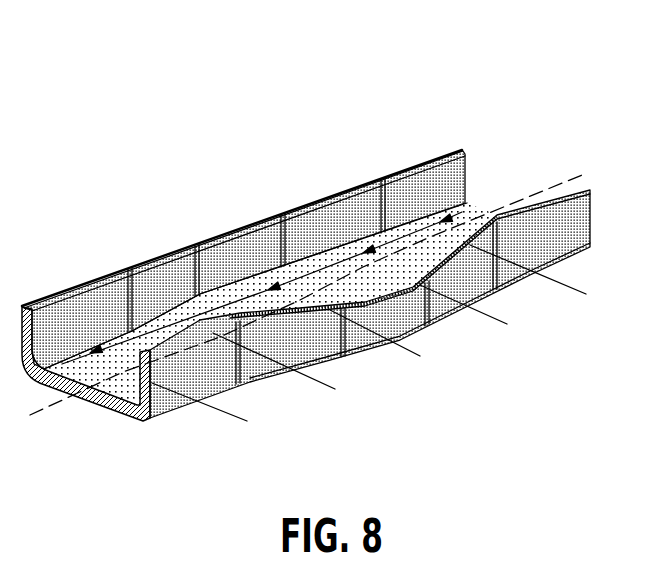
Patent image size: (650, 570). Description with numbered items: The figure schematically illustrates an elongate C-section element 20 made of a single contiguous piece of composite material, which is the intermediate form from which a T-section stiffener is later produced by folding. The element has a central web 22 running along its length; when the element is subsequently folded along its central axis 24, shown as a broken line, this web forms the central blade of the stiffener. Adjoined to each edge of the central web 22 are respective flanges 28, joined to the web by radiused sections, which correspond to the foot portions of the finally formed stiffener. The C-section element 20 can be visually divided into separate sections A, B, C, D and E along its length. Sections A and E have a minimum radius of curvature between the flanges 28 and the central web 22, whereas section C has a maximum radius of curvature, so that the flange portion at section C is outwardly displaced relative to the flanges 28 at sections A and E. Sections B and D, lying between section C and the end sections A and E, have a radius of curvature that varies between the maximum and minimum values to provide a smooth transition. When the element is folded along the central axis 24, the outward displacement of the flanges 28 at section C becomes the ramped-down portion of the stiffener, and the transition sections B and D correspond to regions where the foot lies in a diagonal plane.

The C-section element 20 is at (311, 233).
The central web 22 is at (53, 383).
The central axis 24 is at (571, 177).
The flanges 28 is at (70, 298).
The section A is at (208, 410).
The section B is at (284, 367).
The section C is at (384, 340).
The section D is at (473, 311).
The section E is at (536, 276).